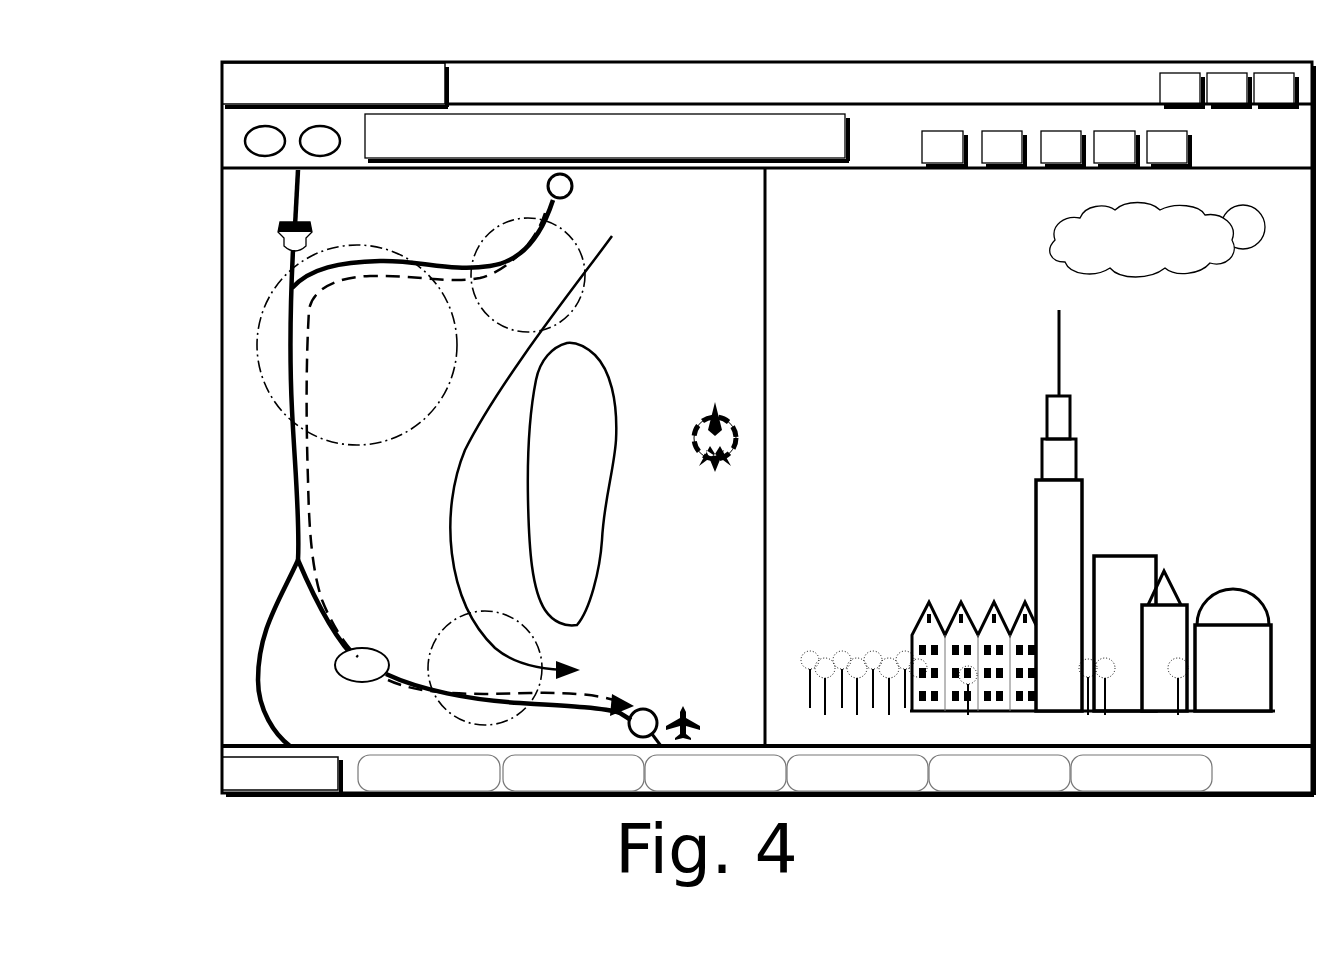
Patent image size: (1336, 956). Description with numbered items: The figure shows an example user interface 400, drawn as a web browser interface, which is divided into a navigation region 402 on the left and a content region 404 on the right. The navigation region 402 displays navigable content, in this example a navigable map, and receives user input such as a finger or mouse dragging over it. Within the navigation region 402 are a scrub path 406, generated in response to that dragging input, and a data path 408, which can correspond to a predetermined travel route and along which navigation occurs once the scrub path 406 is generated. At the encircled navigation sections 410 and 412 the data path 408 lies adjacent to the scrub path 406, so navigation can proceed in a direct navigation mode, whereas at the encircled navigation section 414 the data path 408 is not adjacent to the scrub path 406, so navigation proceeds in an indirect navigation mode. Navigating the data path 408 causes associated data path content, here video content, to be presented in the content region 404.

The user interface 400 is at (222, 62).
The navigation region 402 is at (648, 300).
The content region 404 is at (892, 220).
The scrub path 406 is at (601, 236).
The data path 408 is at (578, 199).
The navigation section 410 is at (498, 222).
The navigation section 412 is at (452, 620).
The navigation section 414 is at (360, 456).